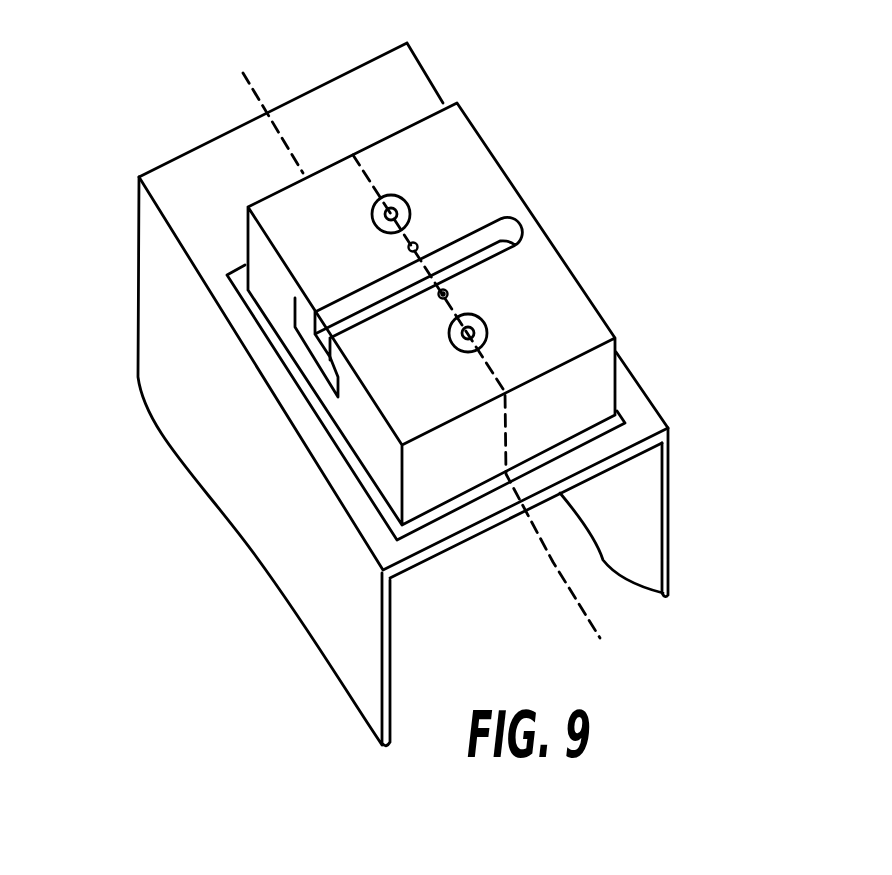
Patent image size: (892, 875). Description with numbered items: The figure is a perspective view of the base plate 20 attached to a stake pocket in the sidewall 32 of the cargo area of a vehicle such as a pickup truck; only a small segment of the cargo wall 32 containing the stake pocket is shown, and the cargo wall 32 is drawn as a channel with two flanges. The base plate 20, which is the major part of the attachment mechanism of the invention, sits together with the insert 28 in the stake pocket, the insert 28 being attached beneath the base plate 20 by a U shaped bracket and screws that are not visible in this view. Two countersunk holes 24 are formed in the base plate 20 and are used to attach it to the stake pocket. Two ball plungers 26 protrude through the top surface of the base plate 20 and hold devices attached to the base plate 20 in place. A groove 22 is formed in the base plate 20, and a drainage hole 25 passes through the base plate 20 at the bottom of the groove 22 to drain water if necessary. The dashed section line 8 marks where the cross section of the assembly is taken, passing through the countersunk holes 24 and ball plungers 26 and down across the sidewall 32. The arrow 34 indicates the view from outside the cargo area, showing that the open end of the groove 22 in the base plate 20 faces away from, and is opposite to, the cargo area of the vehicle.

The section line 8-8' 8 is at (243, 73).
The base plate 20 is at (472, 157).
The groove 22 is at (323, 348).
The countersunk holes 24 is at (384, 194).
The drainage hole 25 is at (425, 290).
The ball plungers 26 is at (413, 247).
The insert 28 is at (623, 420).
The sidewall of cargo area 32 is at (290, 511).
The arrow indicating view direction 34 is at (168, 490).